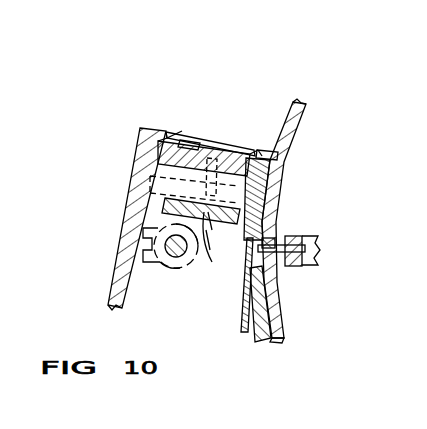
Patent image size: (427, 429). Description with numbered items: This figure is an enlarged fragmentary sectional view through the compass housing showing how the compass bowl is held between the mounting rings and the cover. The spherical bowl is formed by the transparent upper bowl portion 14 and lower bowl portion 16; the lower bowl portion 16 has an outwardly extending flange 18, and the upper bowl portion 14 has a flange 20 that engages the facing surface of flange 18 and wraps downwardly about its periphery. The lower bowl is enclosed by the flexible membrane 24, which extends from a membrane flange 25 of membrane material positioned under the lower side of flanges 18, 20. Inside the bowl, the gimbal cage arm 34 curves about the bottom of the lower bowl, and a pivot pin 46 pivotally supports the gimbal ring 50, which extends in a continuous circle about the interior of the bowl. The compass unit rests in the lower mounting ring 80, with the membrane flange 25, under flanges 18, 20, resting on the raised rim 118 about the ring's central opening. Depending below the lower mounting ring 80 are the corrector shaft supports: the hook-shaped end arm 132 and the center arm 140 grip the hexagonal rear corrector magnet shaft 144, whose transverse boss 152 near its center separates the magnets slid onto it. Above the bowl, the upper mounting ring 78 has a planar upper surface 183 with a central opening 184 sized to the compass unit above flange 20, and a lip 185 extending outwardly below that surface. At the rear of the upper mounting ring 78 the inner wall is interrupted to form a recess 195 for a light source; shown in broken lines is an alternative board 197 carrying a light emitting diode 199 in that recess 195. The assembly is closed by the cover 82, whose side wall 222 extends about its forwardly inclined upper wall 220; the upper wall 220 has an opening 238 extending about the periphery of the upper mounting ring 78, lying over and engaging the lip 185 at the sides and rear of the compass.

The upper bowl portion 14 is at (292, 104).
The lower bowl portion 16 is at (268, 333).
The flange 18 is at (275, 181).
The flange 20 is at (256, 150).
The flexible membrane 24 is at (246, 320).
The membrane flange 25 is at (212, 247).
The gimbal cage arm 34 is at (284, 326).
The pivot pin 46 is at (312, 246).
The gimbal ring 50 is at (318, 256).
The upper mounting ring 78 is at (182, 128).
The lower mounting ring 80 is at (158, 207).
The cover 82 is at (106, 285).
The raised rim 118 is at (213, 213).
The end arm 132 is at (198, 272).
The center arm 140 is at (152, 236).
The rear corrector magnet shaft 144 is at (185, 272).
The boss 152 is at (160, 268).
The upper surface 183 is at (262, 150).
The central opening 184 is at (276, 153).
The lip 185 is at (166, 133).
The recess 195 is at (208, 147).
The board 197 is at (136, 155).
The light emitting diode 199 is at (228, 133).
The upper wall 220 is at (150, 128).
The side wall 222 is at (130, 180).
The opening 238 is at (192, 141).